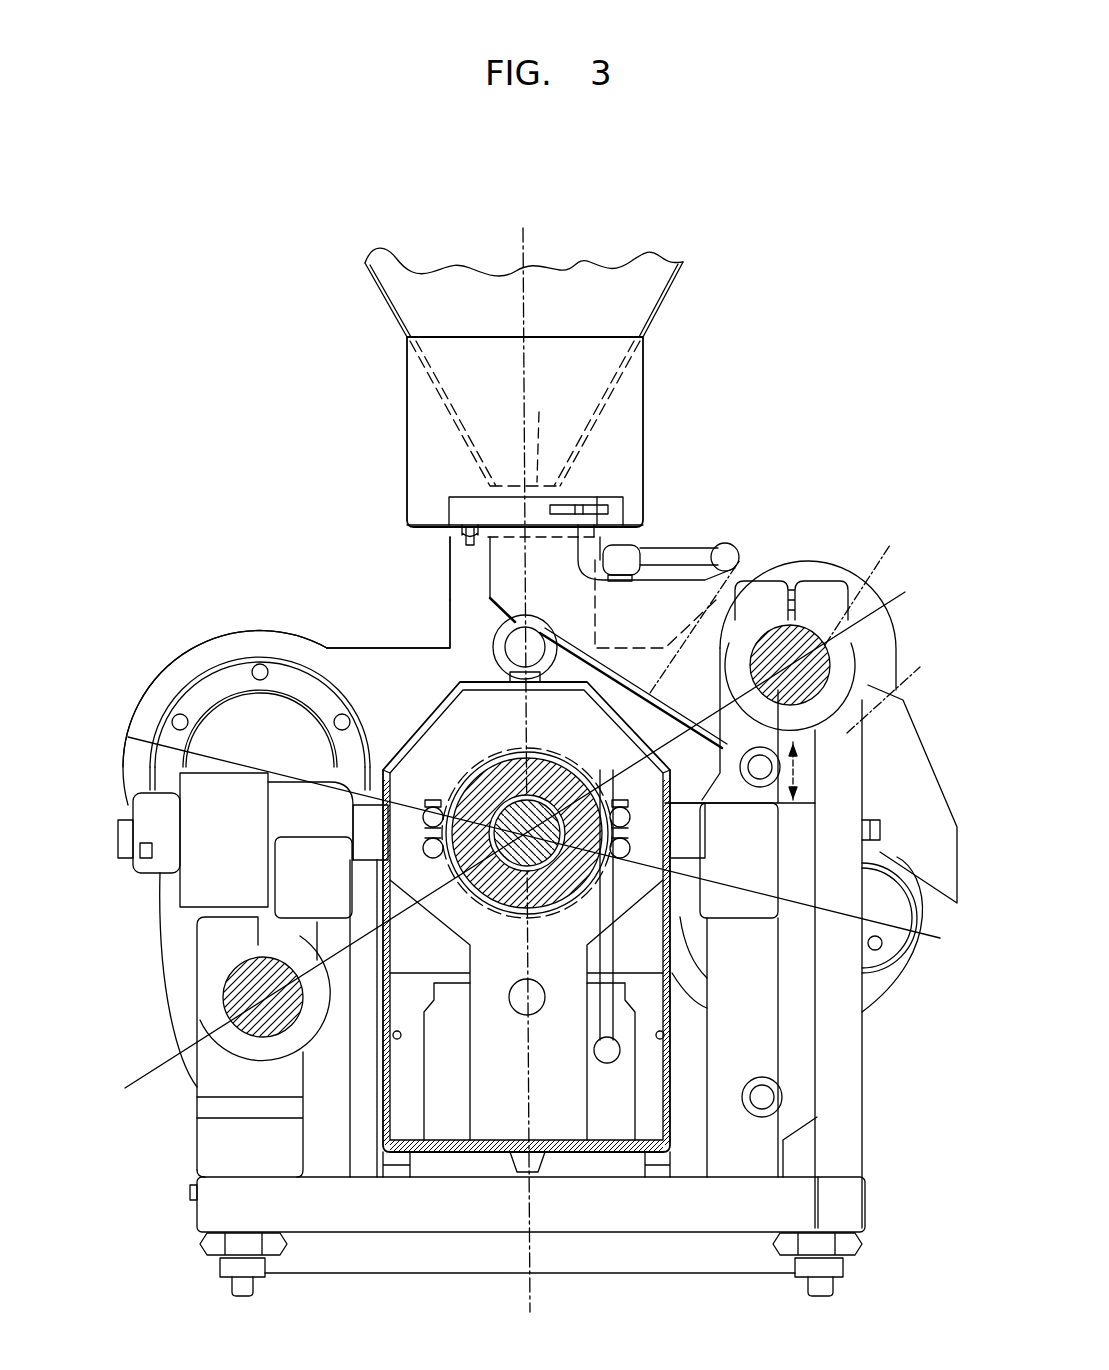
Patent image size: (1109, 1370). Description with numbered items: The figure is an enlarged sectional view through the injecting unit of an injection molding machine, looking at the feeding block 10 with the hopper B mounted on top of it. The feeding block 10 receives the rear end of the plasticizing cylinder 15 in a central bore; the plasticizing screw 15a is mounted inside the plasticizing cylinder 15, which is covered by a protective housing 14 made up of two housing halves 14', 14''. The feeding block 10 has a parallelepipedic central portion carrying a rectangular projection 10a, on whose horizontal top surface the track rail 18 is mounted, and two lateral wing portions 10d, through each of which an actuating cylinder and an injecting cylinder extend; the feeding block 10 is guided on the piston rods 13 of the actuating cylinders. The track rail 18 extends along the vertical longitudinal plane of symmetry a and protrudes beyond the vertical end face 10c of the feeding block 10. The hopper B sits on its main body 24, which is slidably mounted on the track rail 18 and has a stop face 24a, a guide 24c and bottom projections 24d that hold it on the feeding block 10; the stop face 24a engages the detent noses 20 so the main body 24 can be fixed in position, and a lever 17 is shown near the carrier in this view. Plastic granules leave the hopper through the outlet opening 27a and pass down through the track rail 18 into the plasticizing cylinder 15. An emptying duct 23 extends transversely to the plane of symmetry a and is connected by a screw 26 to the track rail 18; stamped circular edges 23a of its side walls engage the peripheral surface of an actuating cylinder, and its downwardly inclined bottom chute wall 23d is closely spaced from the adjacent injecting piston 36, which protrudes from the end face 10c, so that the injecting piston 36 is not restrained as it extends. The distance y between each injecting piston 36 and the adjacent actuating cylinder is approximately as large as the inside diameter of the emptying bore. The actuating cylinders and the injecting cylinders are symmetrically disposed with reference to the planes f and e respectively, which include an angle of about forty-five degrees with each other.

The feeding block 10 is at (226, 632).
The projection 10a is at (468, 590).
The vertical end face 10c is at (438, 668).
The lateral wing portions 10d is at (172, 688).
The piston rods 13 is at (232, 992).
The protective housing 14 is at (526, 954).
The housing half 14' is at (452, 1172).
The housing half 14'' is at (373, 690).
The plasticizing cylinder 15 is at (555, 893).
The plasticizing screw 15a is at (518, 900).
The lever 17 is at (700, 553).
The track rail 18 is at (532, 508).
The slot 20 is at (583, 510).
The emptying duct 23 is at (925, 747).
The stamped circular edges 23a is at (898, 680).
The bottom chute wall 23d is at (742, 666).
The main body 24 is at (612, 408).
The stop face 24a is at (613, 522).
The guide 24c is at (452, 500).
The bottom projections 24d is at (470, 535).
The screw 26 is at (470, 568).
The outlet opening 27a is at (538, 433).
The injecting pistons 36 is at (276, 757).
The hopper B is at (442, 252).
The vertical longitudinal plane of symmetry a is at (523, 770).
The plane of symmetry of injecting cylinders e is at (532, 837).
The plane of symmetry of actuating cylinders f is at (512, 843).
The distance y is at (801, 780).